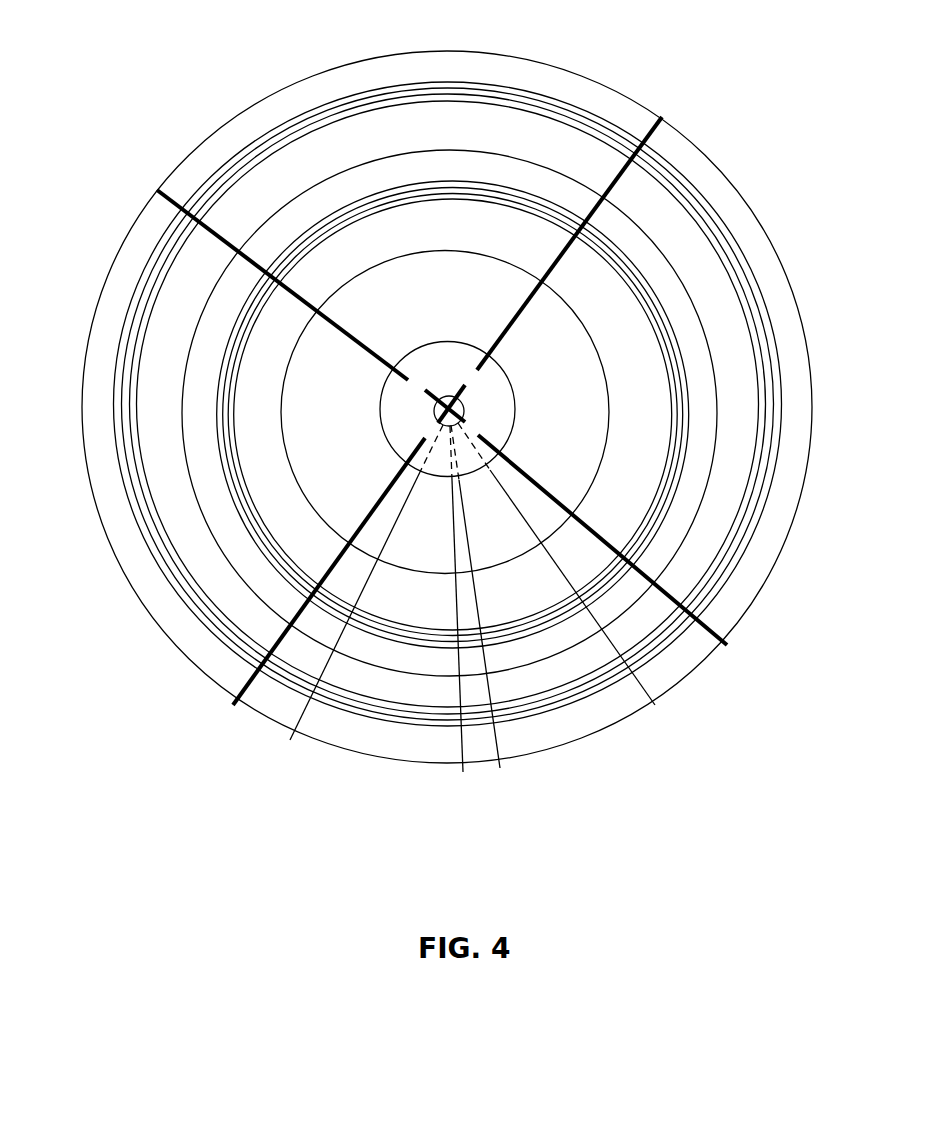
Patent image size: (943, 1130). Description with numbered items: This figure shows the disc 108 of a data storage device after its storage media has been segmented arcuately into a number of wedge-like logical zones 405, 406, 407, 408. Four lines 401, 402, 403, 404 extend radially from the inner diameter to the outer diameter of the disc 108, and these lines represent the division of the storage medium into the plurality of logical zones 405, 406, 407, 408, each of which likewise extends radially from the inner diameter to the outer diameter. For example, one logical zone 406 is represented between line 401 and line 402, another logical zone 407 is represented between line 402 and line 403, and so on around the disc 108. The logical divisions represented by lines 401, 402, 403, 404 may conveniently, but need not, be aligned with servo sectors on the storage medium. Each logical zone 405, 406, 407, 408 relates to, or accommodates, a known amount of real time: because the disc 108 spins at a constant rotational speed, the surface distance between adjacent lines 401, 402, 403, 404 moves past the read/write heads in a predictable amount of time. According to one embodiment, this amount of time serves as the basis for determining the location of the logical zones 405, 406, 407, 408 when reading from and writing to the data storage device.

The disc 108 is at (205, 138).
The line 401 is at (662, 117).
The line 402 is at (157, 190).
The line 403 is at (236, 695).
The line 404 is at (727, 645).
The logical zone 405 is at (793, 429).
The logical zone 406 is at (457, 80).
The logical zone 407 is at (97, 457).
The logical zone 408 is at (422, 755).